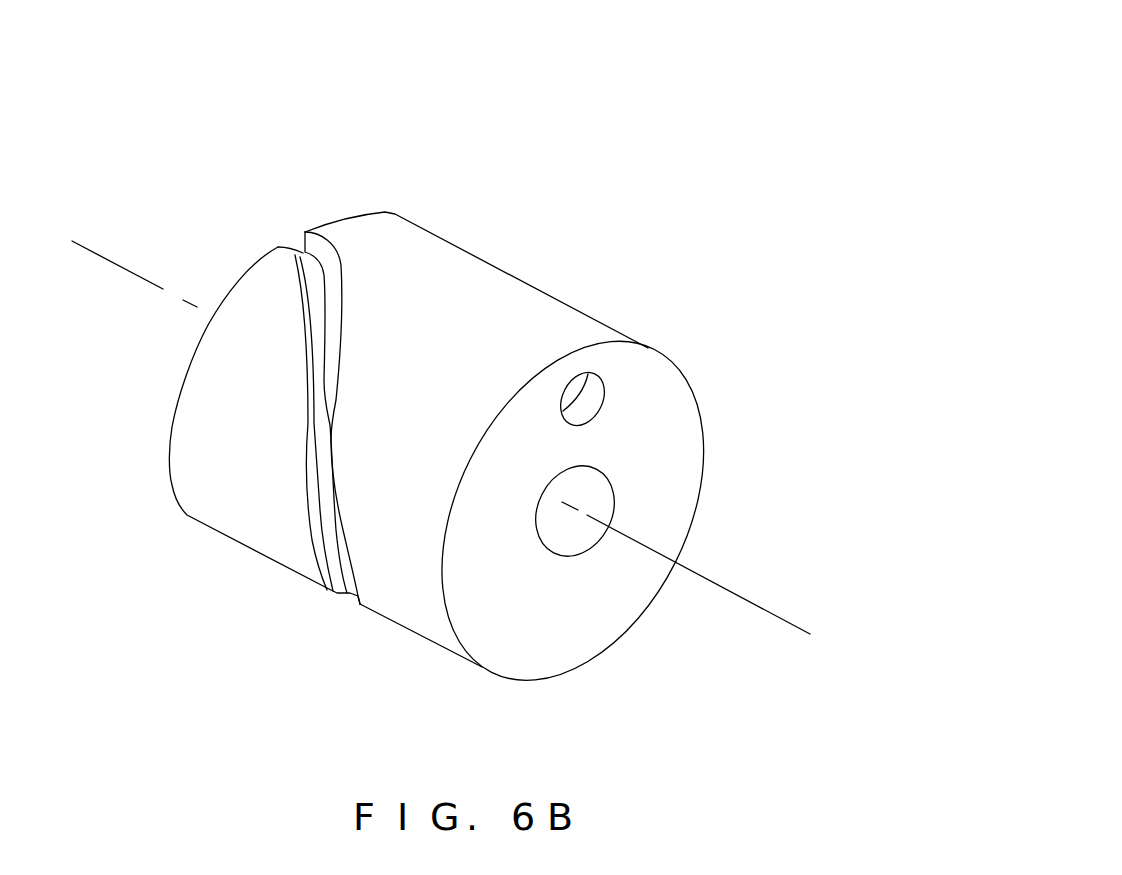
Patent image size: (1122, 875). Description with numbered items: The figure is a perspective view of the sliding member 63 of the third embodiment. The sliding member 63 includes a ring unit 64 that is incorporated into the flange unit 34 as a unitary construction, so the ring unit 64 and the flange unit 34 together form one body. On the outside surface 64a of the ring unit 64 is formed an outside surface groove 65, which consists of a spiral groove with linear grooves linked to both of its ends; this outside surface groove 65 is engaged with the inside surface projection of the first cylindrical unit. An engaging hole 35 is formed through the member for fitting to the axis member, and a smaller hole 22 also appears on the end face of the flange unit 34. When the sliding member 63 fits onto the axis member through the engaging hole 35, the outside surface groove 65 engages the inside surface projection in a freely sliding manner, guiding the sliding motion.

The sliding member 63 is at (673, 142).
The ring unit 64 is at (420, 230).
The outside surface 64a is at (465, 330).
The outside surface groove 65 is at (330, 485).
The flange unit 34 is at (675, 455).
The small hole 22 is at (594, 394).
The engaging hole 35 is at (570, 540).